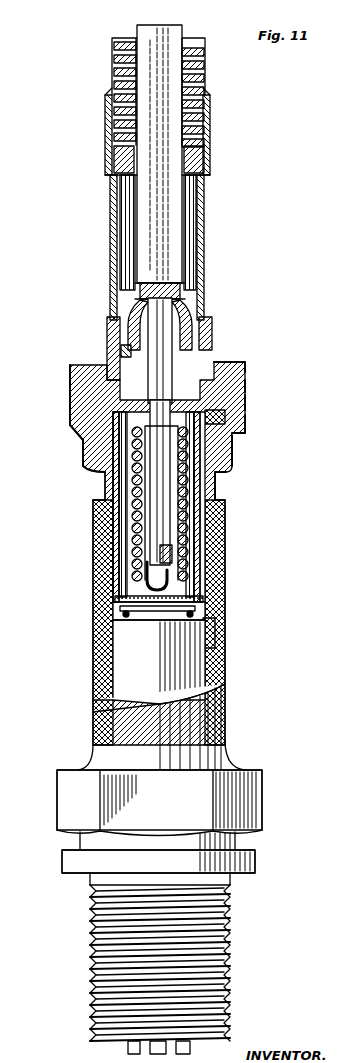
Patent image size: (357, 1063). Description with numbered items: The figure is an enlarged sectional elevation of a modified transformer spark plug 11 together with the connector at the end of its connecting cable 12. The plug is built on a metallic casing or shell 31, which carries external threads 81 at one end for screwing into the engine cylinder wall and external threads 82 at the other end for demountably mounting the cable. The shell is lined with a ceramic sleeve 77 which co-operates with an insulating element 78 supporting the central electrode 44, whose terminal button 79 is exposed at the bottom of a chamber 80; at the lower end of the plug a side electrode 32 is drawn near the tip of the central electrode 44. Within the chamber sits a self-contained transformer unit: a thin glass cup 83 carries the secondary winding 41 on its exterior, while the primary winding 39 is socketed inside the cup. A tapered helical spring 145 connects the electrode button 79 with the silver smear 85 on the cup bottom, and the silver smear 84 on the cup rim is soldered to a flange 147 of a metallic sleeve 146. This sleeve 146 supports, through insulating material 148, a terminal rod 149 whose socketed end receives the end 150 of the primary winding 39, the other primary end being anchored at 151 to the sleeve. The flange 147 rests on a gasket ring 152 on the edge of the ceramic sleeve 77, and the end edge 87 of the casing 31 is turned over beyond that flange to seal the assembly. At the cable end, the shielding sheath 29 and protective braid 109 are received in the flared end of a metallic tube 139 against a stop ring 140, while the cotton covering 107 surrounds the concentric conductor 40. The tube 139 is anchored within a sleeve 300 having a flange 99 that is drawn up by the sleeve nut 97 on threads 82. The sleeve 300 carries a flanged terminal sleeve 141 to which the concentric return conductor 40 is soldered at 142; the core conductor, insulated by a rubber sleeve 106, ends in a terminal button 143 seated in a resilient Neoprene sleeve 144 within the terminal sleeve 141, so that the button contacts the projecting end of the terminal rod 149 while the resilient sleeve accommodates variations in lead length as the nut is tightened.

The connecting cable 12 is at (198, 31).
The protective bronze braid 109 is at (207, 88).
The shielding sheath 29 is at (209, 125).
The stop ring 140 is at (205, 168).
The metallic tube 139 is at (204, 200).
The cotton covering 107 is at (183, 233).
The concentric conductor 40 is at (181, 290).
The soldering 142 is at (190, 318).
The sleeve of rubber 106 is at (211, 335).
The flange 99 is at (244, 370).
The end edge of spark plug casing 87 is at (245, 388).
The silver smear 84 is at (245, 403).
The gasket ring 152 is at (214, 418).
The sleeve nut 97 is at (240, 429).
The insulating material 148 is at (234, 449).
The external threads 82 is at (230, 464).
The primary winding 39 is at (170, 527).
The glass cup 83 is at (201, 556).
The secondary winding 41 is at (196, 576).
The ceramic sleeve 77 is at (195, 592).
The silver smear 85 is at (196, 606).
The chamber 80 is at (193, 618).
The terminal button 79 is at (213, 636).
The insulating element 78 is at (185, 676).
The metallic casing or shell 31 is at (236, 710).
The transformer spark plug 11 is at (244, 752).
The external threads 81 is at (232, 956).
The electrode 32 is at (128, 1047).
The central electrode 44 is at (150, 1050).
The sleeve 300 is at (107, 333).
The resilient sleeve 144 is at (121, 352).
The flanged terminal sleeve 141 is at (72, 372).
The terminal button 143 is at (70, 390).
The flange 147 is at (82, 430).
The metallic sleeve 146 is at (84, 446).
The anchorage 151 is at (90, 462).
The terminal rod 149 is at (96, 490).
The end of primary winding 150 is at (145, 578).
The tapered helical spring 145 is at (123, 614).